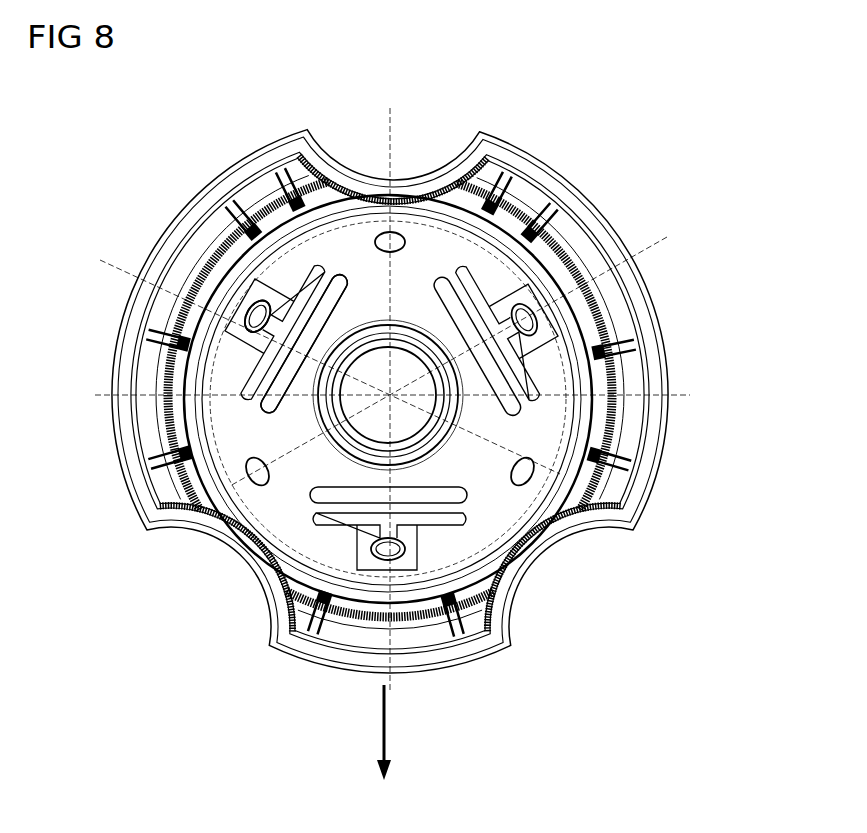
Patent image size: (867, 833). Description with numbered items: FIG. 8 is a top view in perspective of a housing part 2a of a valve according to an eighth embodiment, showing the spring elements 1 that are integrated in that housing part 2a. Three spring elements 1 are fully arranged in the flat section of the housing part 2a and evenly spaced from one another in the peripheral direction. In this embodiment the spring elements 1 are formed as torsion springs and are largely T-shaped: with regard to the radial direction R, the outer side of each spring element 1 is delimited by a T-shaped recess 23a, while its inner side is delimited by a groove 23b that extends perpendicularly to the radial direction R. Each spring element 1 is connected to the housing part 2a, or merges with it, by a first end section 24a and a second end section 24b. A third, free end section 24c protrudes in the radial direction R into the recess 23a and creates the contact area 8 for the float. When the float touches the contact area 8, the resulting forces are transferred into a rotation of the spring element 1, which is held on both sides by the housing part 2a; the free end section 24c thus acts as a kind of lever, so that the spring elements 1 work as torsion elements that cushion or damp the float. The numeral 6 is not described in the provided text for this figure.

The spring element 1 is at (470, 312).
The housing part 2a is at (655, 184).
The ring body 6 is at (433, 243).
The contact area 8 is at (258, 316).
The T-shaped recess 23a is at (250, 297).
The groove 23b is at (355, 292).
The first end section 24a is at (252, 409).
The second end section 24b is at (350, 290).
The third, free end section 24c is at (250, 318).
The radial direction R is at (388, 724).